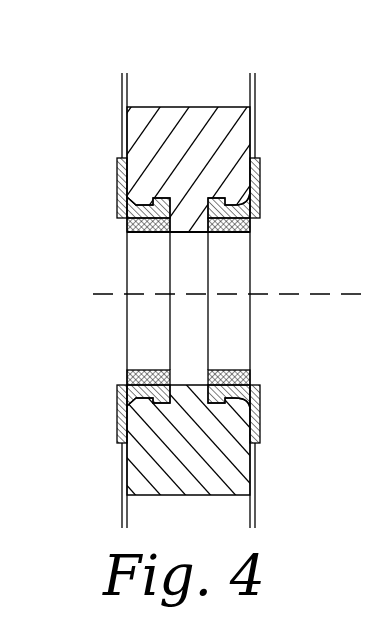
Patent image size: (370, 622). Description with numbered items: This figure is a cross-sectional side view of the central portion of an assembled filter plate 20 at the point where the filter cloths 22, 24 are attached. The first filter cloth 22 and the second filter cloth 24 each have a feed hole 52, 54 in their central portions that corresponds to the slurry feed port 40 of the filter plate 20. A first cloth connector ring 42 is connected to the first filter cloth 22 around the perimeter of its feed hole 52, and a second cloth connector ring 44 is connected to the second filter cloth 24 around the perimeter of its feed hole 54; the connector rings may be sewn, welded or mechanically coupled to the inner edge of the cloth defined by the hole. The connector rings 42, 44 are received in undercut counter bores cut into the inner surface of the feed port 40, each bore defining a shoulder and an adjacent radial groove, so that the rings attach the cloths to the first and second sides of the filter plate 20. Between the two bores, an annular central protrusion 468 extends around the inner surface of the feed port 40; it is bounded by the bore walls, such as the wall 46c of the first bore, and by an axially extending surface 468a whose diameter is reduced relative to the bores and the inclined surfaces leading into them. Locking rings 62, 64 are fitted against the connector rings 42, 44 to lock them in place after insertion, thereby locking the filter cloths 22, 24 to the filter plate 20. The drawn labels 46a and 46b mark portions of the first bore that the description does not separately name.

The filter plate 20 is at (194, 63).
The first filter cloth 22 is at (256, 93).
The second filter cloth 24 is at (121, 85).
The slurry feed port 40 is at (190, 310).
The first cloth connector ring 42 is at (257, 193).
The second cloth connector ring 44 is at (118, 178).
The spacer portion 46a is at (260, 191).
The spacer portion 46b is at (210, 200).
The wall of the first bore 46c is at (207, 215).
The feed hole 52 is at (252, 227).
The feed hole 54 is at (125, 222).
The locking ring 62 is at (252, 383).
The locking ring 64 is at (127, 383).
The annular central protrusion 468 is at (162, 235).
The axially extending surface 468a is at (185, 233).